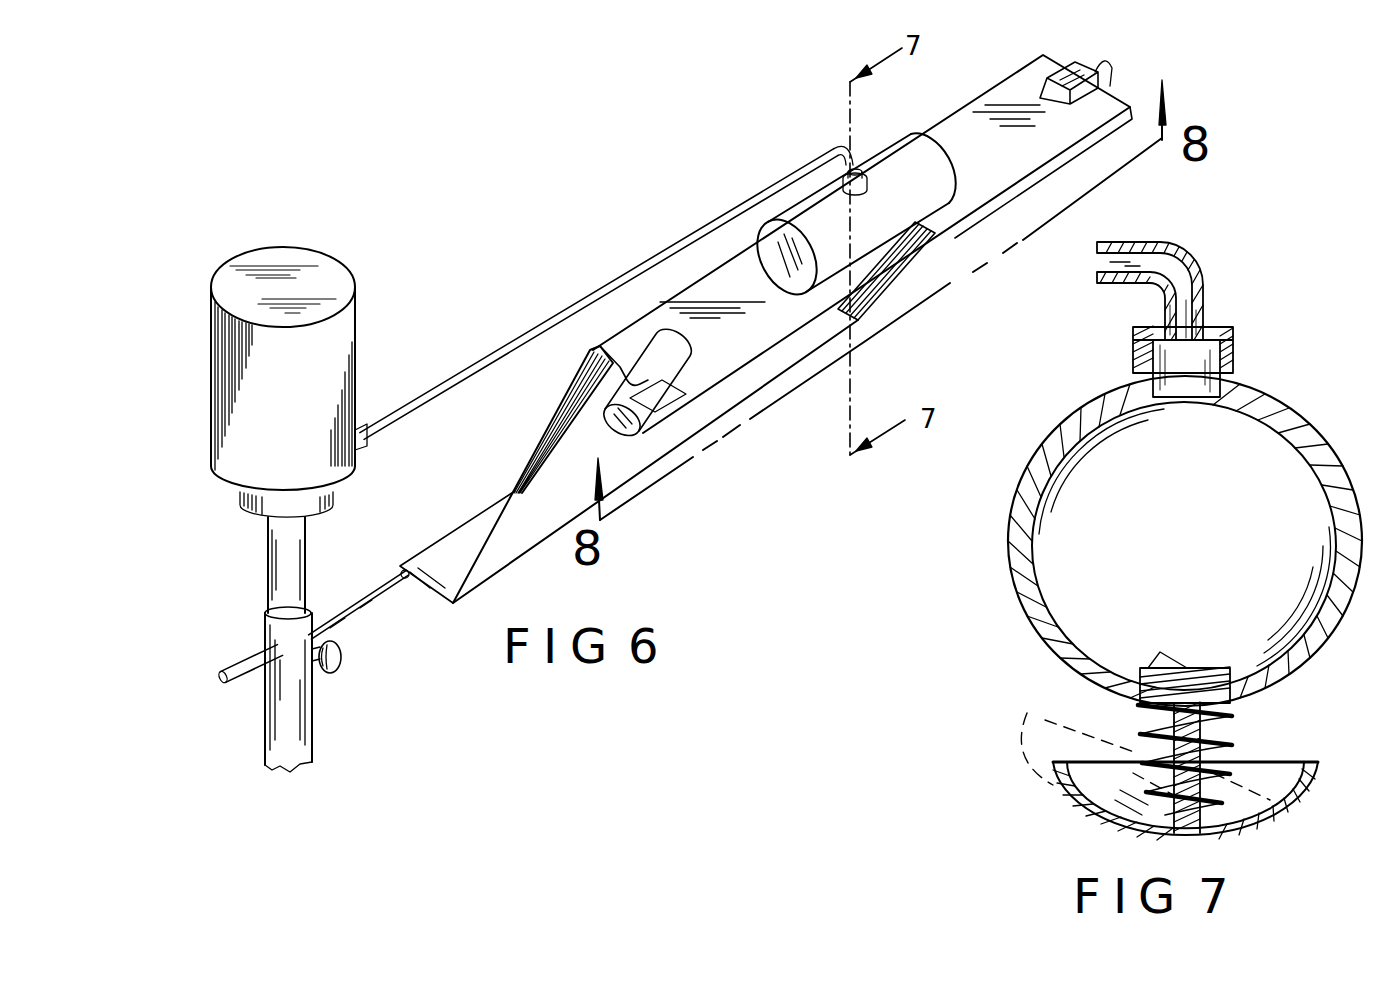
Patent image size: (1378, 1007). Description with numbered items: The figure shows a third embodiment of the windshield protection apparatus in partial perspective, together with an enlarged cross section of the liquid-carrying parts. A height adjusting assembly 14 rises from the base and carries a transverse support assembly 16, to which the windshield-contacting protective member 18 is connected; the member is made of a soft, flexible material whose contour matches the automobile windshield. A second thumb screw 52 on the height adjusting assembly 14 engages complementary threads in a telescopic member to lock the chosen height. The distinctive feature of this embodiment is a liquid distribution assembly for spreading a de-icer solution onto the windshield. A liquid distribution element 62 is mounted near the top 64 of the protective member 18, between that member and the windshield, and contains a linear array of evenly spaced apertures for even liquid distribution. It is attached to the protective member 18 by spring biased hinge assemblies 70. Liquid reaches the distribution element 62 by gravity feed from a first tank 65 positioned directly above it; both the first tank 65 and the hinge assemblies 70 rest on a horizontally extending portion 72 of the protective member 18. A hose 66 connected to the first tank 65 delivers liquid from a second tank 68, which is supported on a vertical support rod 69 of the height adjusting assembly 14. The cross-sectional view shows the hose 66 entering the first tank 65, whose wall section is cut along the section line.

In FIG. 6, the height adjusting assembly 14 is at (316, 751).
In FIG. 6, the transverse support assembly 16 is at (367, 610).
In FIG. 6, the windshield-contacting protective member 18 is at (523, 492).
In FIG. 6, the second thumb screw 52 is at (340, 661).
In FIG. 6, the liquid distribution element 62 is at (640, 437).
In FIG. 6, the top 64 is at (567, 397).
In FIG. 6, the first tank 65 is at (893, 172).
In FIG. 7, the first tank 65 is at (1265, 403).
In FIG. 6, the hose 66 is at (393, 418).
In FIG. 7, the hose 66 is at (1200, 254).
In FIG. 6, the second tank 68 is at (325, 358).
In FIG. 6, the vertical support rod 69 is at (290, 563).
In FIG. 6, the spring biased hinge assemblies 70 is at (1010, 63).
In FIG. 6, the horizontally extending portion 72 is at (1037, 163).